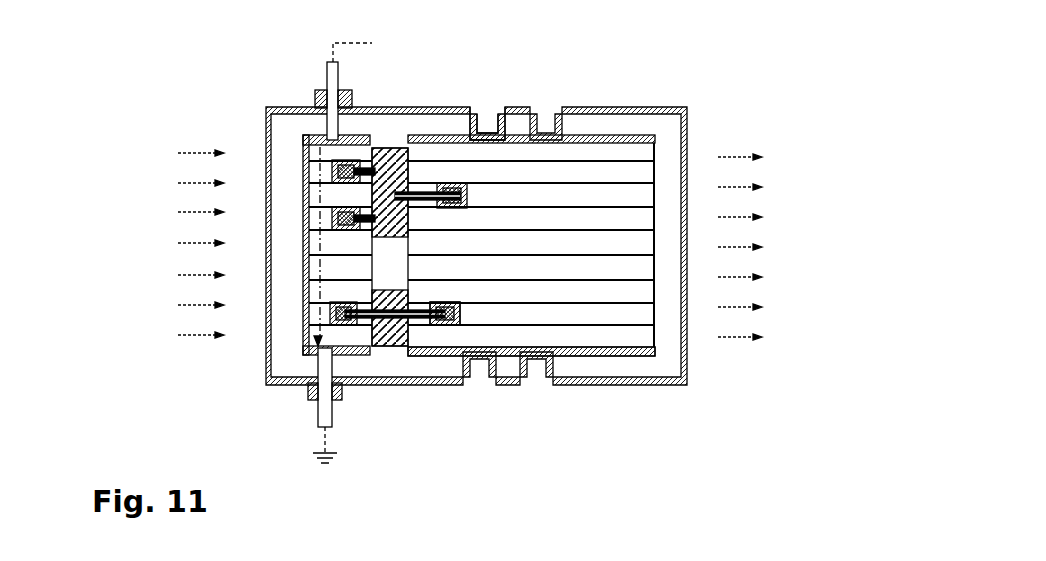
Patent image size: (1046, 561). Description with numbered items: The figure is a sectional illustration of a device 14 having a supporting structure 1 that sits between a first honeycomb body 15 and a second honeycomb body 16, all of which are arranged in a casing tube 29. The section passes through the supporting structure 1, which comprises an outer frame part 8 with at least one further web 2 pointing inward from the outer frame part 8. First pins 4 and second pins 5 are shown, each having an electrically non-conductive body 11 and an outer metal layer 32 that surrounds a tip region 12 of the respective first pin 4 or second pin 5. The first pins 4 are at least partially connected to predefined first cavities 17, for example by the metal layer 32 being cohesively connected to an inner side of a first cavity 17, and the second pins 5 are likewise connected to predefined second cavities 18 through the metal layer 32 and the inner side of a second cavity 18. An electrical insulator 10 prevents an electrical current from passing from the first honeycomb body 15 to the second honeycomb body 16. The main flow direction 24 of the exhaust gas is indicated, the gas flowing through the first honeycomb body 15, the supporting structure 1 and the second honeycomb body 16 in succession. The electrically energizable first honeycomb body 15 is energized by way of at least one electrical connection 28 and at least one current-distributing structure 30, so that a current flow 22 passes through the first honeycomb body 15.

The supporting structure 1 is at (401, 251).
The web 2 is at (368, 263).
The first pin 4 is at (271, 296).
The second pin 5 is at (531, 398).
The outer frame part 8 is at (342, 406).
The electrical insulator 10 is at (256, 216).
The electrically non-conductive body 11 is at (446, 104).
The tip region 12 is at (526, 376).
The device 14 is at (544, 195).
The first honeycomb body 15 is at (192, 244).
The second honeycomb body 16 is at (630, 246).
The first cavity 17 is at (225, 195).
The second cavity 18 is at (632, 211).
The current flow 22 is at (295, 370).
The main flow direction 24 is at (777, 209).
The electrical connection 28 is at (323, 64).
The casing tube 29 is at (512, 84).
The current-distributing structure 30 is at (323, 133).
The metal layer 32 is at (348, 381).